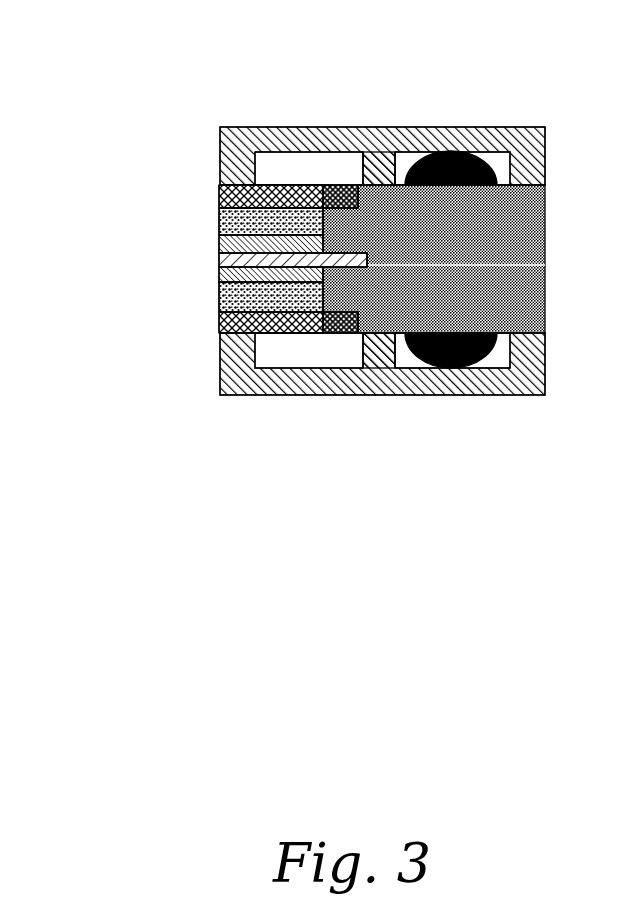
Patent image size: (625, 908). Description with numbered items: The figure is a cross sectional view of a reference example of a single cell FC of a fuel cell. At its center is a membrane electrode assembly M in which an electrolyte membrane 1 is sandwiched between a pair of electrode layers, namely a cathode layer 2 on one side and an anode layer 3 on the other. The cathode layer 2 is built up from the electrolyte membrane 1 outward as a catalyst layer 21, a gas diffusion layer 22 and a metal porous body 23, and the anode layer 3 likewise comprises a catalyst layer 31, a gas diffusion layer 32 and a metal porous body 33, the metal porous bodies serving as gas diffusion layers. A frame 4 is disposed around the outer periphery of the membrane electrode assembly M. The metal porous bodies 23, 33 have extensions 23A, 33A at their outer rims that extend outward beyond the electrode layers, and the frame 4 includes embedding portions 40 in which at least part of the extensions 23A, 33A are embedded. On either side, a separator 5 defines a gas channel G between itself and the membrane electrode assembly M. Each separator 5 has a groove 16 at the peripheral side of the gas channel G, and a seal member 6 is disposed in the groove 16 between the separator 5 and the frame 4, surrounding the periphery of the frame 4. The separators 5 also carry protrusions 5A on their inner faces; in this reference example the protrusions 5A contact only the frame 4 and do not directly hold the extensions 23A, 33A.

The electrolyte membrane 1 is at (367, 262).
The cathode layer 2 is at (203, 193).
The anode layer 3 is at (203, 306).
The frame 4 is at (518, 229).
The separator 5 is at (271, 127).
The protrusion 5A is at (405, 152).
The seal member 6 is at (493, 127).
The groove 16 is at (498, 163).
The catalyst layer 21 is at (228, 230).
The gas diffusion layer 22 is at (219, 220).
The metal porous body 23 is at (219, 195).
The extension 23A is at (340, 186).
The catalyst layer 31 is at (219, 275).
The gas diffusion layer 32 is at (219, 298).
The metal porous body 33 is at (227, 330).
The extension 33A is at (350, 334).
The embedding portion 40 is at (317, 185).
The gas channel G is at (317, 163).
The membrane electrode assembly M is at (76, 165).
The single cell FC is at (462, 117).